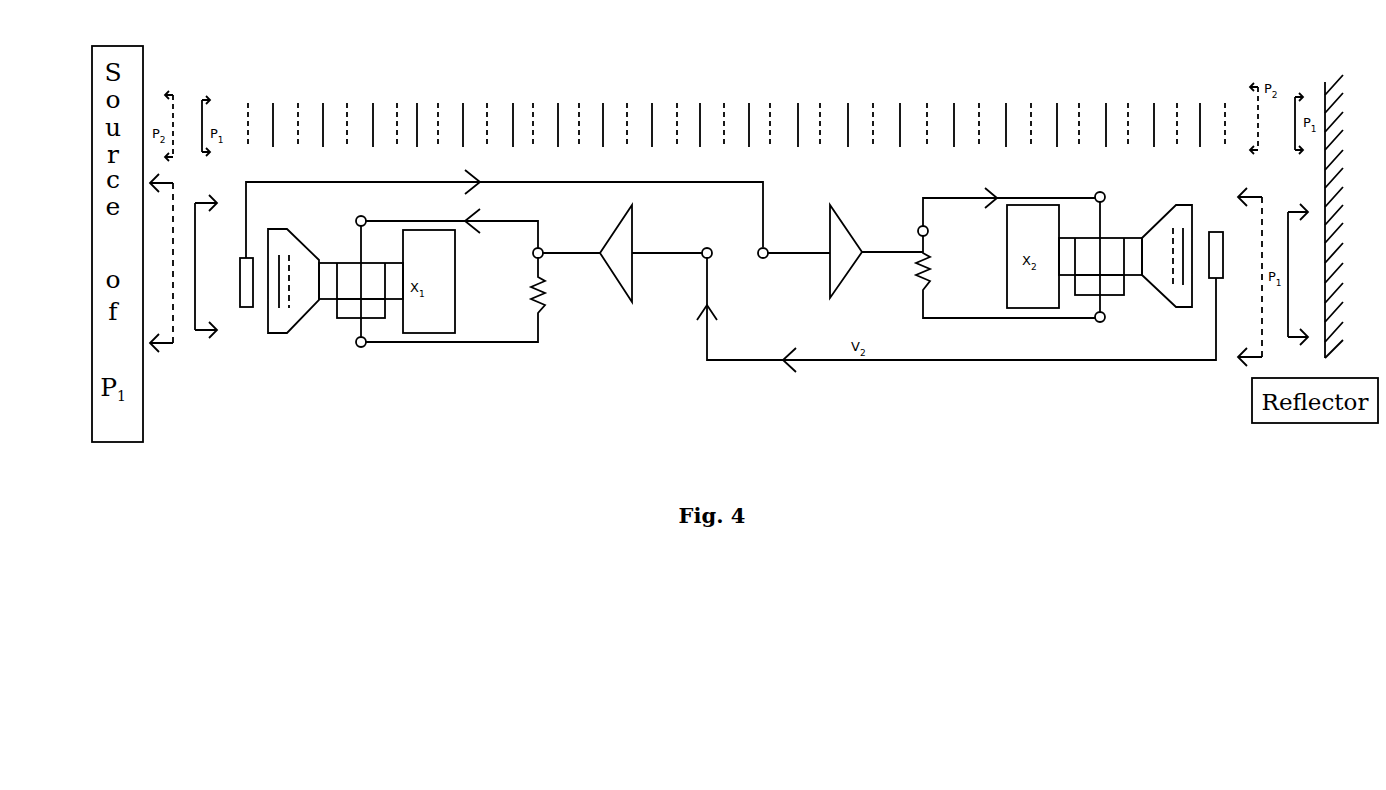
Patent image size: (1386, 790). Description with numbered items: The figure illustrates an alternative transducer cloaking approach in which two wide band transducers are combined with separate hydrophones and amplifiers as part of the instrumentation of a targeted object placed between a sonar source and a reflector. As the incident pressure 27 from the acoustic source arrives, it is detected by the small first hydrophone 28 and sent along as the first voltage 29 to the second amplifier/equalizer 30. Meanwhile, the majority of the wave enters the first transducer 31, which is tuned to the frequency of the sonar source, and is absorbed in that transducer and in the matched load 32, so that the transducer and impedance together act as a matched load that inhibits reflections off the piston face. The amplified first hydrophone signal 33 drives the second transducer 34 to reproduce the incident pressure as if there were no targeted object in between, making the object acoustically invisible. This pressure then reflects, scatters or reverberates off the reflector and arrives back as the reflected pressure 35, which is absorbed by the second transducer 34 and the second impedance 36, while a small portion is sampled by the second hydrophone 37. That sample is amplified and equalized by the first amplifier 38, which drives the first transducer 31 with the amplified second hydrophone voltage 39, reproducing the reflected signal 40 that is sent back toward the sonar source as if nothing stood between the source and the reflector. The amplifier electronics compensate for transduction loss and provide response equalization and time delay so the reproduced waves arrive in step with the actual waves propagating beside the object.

The pressure P1 27 is at (192, 337).
The hydrophone H1 28 is at (250, 258).
The voltage V1 29 is at (553, 168).
The amplifier/equalizer A2 30 is at (833, 222).
The transducer X1 31 is at (351, 282).
The matched load Z1 32 is at (538, 314).
The signal A2V1 33 is at (1038, 177).
The transducer X2 34 is at (1105, 257).
The pressure P2 35 is at (1248, 343).
The impedance Z2 36 is at (928, 280).
The hydrophone H2 37 is at (1209, 232).
The amplifier A1 38 is at (632, 212).
The voltage A1V2 39 is at (552, 212).
The reproduced signal P2 40 is at (170, 350).